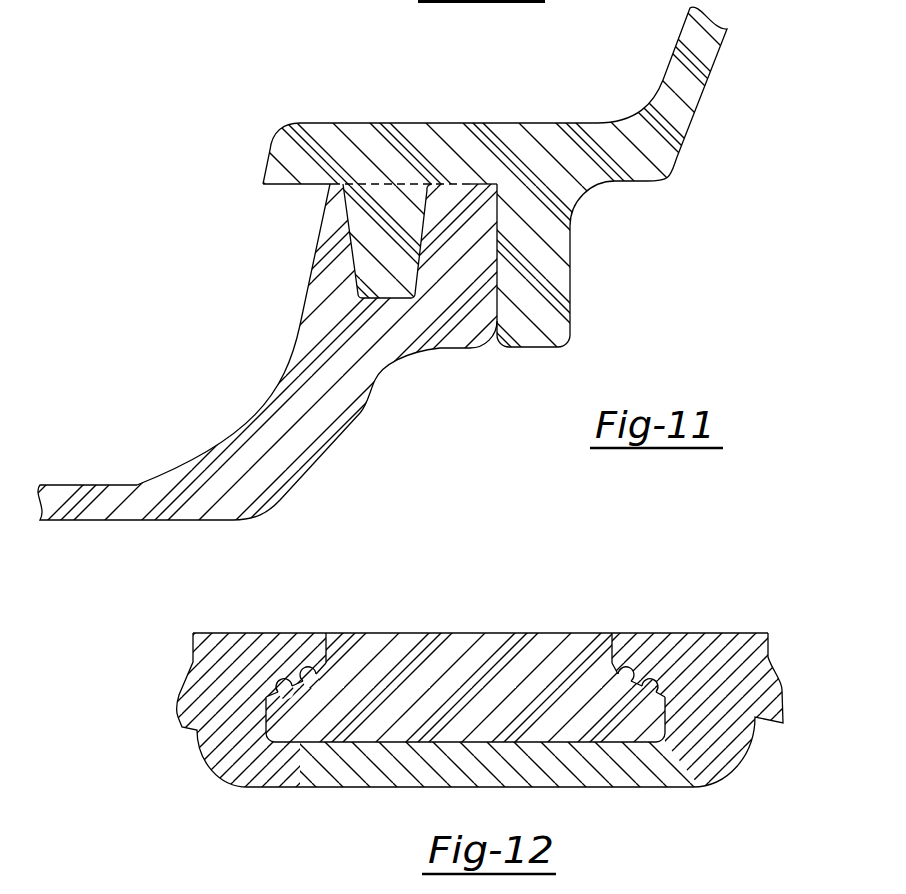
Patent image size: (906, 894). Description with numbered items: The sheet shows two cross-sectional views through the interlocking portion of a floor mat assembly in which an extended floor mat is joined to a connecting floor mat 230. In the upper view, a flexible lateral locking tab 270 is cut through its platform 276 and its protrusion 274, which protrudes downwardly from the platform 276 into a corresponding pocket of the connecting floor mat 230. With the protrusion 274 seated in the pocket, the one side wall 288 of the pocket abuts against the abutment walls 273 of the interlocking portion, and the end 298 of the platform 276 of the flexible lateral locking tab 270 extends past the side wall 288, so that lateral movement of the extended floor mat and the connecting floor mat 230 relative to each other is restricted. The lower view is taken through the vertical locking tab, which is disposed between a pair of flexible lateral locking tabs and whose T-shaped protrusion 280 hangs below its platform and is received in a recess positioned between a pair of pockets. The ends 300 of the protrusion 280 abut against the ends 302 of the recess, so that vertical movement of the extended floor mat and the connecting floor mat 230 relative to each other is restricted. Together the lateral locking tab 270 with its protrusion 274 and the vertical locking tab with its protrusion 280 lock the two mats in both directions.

In FIG. 11, the connecting floor mat 230 is at (132, 549).
In FIG. 11, the flexible lateral locking tab 270 is at (455, 177).
In FIG. 11, the abutment wall 273 is at (553, 270).
In FIG. 11, the protrusion 274 is at (368, 228).
In FIG. 11, the platform 276 is at (441, 123).
In FIG. 11, the side wall 288 is at (267, 395).
In FIG. 12, the side wall 288 is at (757, 715).
In FIG. 11, the end of the platform 298 is at (270, 145).
In FIG. 12, the T-shaped protrusion 280 is at (470, 633).
In FIG. 12, the ends of the protrusion 300 is at (283, 684).
In FIG. 12, the ends of the recess 302 is at (297, 678).